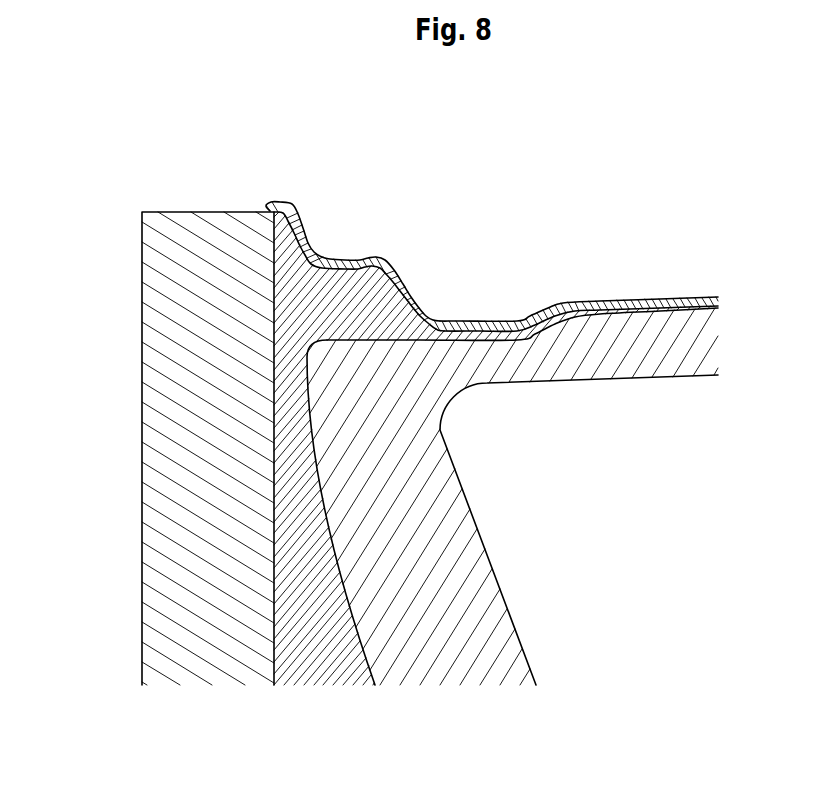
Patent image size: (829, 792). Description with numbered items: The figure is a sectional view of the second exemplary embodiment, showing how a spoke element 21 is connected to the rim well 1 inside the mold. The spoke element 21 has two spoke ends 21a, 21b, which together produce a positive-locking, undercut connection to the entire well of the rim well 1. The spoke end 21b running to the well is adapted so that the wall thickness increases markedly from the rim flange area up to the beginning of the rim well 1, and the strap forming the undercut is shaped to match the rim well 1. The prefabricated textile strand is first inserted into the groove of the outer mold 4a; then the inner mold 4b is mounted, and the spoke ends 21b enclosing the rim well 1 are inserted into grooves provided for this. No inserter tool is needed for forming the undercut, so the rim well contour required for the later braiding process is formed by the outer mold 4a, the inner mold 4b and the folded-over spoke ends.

The rim well 1 is at (693, 302).
The spoke element 21 is at (308, 482).
The spoke end 21a is at (287, 250).
The spoke end 21b is at (500, 330).
The outer mold 4a is at (232, 660).
The inner mold 4b is at (430, 650).